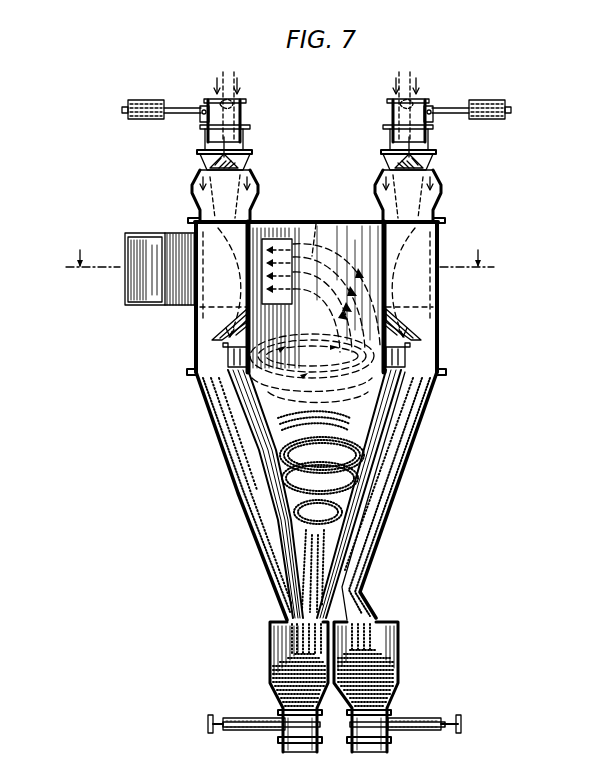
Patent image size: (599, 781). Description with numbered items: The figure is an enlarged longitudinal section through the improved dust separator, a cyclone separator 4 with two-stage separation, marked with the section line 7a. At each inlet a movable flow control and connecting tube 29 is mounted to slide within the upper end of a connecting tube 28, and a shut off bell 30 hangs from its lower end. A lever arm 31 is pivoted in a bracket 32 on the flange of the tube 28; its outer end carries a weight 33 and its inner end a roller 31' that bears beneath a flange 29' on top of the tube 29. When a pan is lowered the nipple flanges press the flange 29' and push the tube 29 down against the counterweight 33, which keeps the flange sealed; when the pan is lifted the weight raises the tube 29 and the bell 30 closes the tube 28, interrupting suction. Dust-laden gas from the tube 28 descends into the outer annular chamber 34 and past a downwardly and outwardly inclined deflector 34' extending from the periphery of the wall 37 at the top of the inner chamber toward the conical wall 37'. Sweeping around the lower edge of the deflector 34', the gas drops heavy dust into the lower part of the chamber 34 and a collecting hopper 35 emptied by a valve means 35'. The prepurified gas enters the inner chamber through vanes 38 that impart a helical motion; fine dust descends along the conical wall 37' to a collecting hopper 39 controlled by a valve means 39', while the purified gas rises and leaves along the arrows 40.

The cyclone separator 4 is at (408, 455).
The connecting tube 28 is at (257, 187).
The movable flow control and connecting tube 29 is at (238, 128).
The flange 29' is at (248, 106).
The shut off bell 30 is at (202, 167).
The lever arm 31 is at (182, 123).
The roller 31' is at (227, 75).
The bracket 32 is at (202, 107).
The weight 33 is at (140, 119).
The outer annular chamber 34 is at (168, 282).
The deflector 34' is at (428, 327).
The collecting hopper 35 is at (382, 687).
The valve means 35' is at (405, 737).
The wall 37 is at (289, 336).
The conical wall 37' is at (352, 511).
The vanes 38 is at (225, 357).
The collecting hopper 39 is at (280, 687).
The valve means 39' is at (264, 737).
The arrows 40 is at (326, 217).
The section line 7a- 7a is at (93, 275).